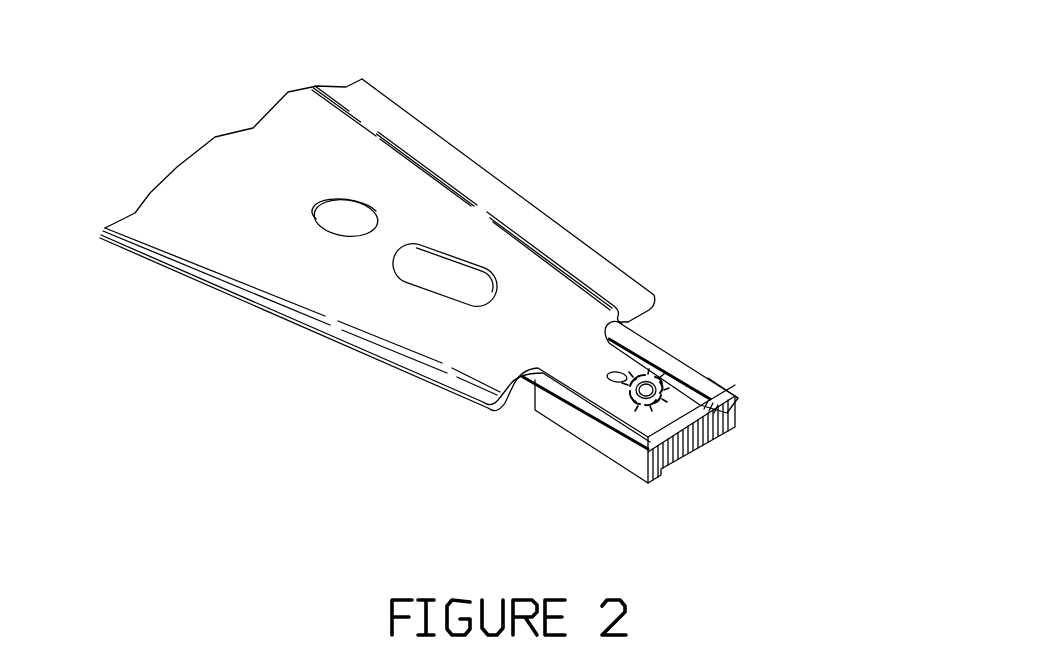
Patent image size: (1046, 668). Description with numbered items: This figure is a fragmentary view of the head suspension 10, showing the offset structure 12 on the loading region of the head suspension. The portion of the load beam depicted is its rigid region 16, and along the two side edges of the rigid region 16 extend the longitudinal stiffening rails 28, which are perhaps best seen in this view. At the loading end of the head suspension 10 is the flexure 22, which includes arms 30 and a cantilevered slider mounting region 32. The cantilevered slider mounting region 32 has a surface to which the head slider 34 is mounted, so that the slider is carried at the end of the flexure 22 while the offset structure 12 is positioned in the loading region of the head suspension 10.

The head suspension 10 is at (559, 170).
The rigid region 16 is at (227, 243).
The longitudinal stiffening rails 28 is at (590, 262).
The arms 30 is at (655, 355).
The flexure 22 is at (768, 373).
The offset structure 12 is at (652, 398).
The cantilevered slider mounting region 32 is at (695, 423).
The head slider 34 is at (677, 425).